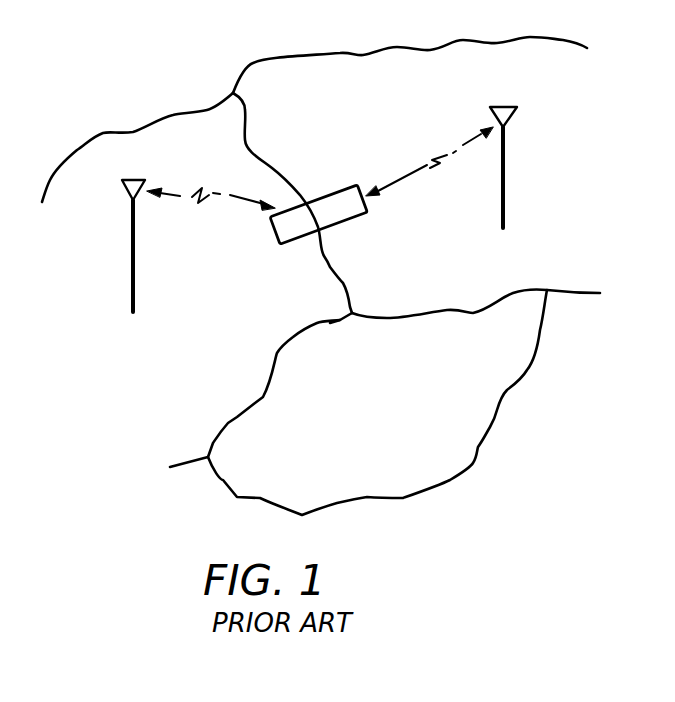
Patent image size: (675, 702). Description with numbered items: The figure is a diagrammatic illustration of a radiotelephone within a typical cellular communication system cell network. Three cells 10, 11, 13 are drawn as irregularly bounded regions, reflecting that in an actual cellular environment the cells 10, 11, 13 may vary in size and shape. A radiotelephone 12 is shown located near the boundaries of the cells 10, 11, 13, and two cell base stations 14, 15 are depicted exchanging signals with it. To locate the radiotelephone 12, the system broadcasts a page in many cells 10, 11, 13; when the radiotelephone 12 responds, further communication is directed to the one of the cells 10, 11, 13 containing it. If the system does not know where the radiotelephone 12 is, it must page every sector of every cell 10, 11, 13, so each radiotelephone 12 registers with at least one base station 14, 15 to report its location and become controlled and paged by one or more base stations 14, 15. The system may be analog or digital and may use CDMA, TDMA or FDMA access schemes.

The cell 10 is at (132, 145).
The cell 11 is at (362, 67).
The radiotelephone 12 is at (303, 240).
The cell 13 is at (490, 393).
The cell base station 14 is at (130, 273).
The cell base station 15 is at (503, 187).